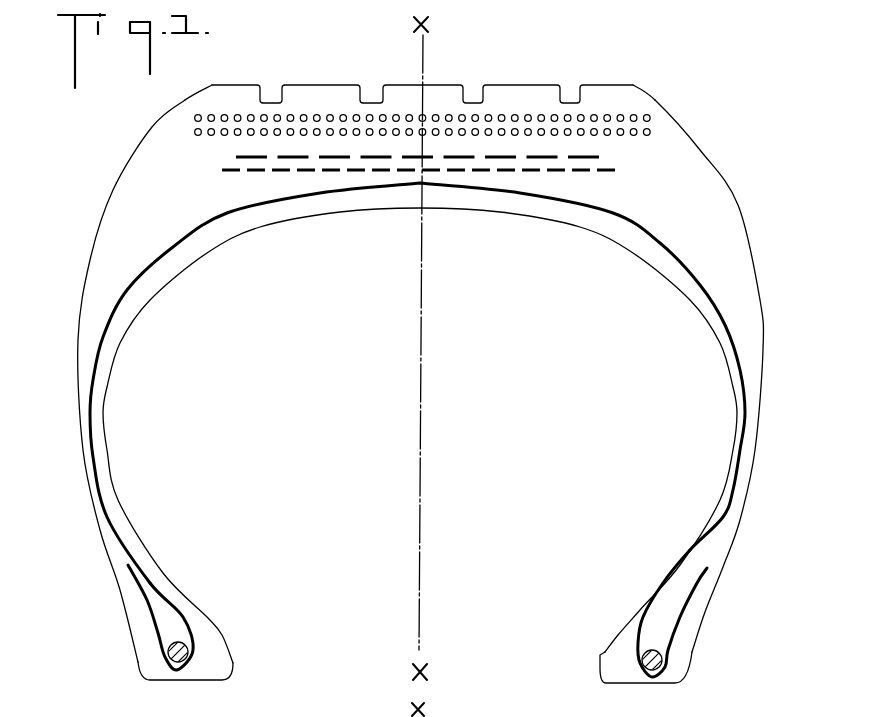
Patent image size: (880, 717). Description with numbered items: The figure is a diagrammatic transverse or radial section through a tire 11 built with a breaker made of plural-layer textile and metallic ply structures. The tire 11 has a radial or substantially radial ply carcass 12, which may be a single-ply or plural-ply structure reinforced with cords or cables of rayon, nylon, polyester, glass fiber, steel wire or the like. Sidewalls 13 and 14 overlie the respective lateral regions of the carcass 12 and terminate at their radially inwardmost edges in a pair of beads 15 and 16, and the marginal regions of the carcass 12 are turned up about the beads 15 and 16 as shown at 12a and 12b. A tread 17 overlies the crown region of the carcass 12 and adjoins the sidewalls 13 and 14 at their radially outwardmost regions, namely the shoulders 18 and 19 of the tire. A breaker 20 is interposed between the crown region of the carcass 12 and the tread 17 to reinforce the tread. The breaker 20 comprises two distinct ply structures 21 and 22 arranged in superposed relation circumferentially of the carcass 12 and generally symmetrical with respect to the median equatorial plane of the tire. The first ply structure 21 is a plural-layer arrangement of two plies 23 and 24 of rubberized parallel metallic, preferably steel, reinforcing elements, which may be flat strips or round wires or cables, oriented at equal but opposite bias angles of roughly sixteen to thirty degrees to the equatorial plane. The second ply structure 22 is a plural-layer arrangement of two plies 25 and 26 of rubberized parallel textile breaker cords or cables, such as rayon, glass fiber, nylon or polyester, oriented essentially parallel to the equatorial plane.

The tire 11 is at (148, 103).
The carcass 12 is at (742, 375).
The carcass ply turn-up 12a is at (688, 600).
The carcass ply turn-up 12b is at (148, 602).
The sidewall 13 is at (738, 205).
The sidewall 14 is at (111, 192).
The bead 15 is at (662, 660).
The bead 16 is at (168, 653).
The tread 17 is at (332, 85).
The shoulder 18 is at (623, 93).
The shoulder 19 is at (212, 96).
The breaker 20 is at (196, 105).
The first ply structure 21 is at (625, 150).
The second ply structure 22 is at (651, 108).
The ply 23 is at (612, 176).
The ply 24 is at (552, 158).
The ply 25 is at (222, 134).
The ply 26 is at (222, 115).